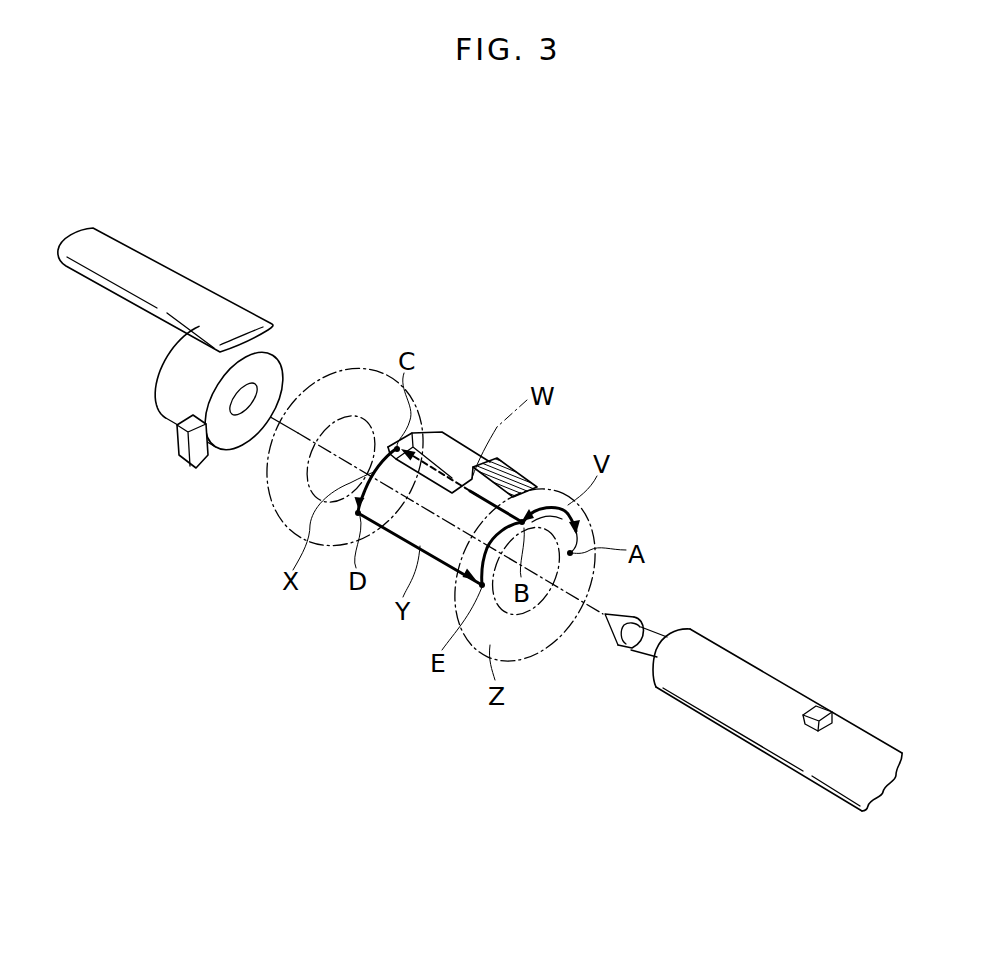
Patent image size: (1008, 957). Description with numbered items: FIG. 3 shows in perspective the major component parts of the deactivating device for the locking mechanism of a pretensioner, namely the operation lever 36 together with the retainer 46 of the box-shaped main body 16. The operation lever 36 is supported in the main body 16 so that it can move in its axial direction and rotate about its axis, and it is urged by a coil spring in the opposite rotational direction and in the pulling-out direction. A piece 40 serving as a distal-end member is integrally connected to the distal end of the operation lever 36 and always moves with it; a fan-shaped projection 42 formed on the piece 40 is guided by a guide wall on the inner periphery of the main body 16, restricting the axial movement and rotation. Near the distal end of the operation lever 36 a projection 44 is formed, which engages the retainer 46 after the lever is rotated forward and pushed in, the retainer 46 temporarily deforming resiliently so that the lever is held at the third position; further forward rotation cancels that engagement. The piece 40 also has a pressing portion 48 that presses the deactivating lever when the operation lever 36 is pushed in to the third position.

The main body 16 is at (598, 521).
The operation lever 36 is at (740, 740).
The piece 40 is at (163, 398).
The projection 42 is at (188, 457).
The projection 44 is at (822, 704).
The retainer 46 is at (423, 433).
The pressing portion 48 is at (80, 237).